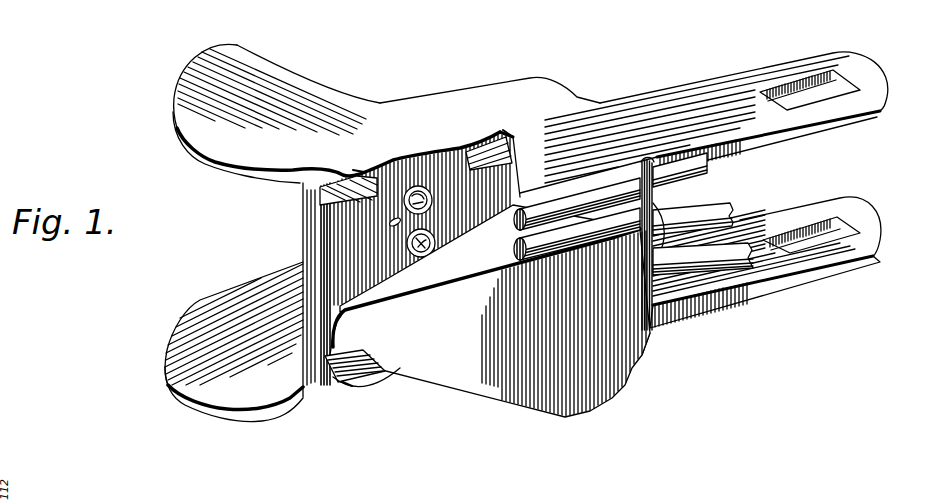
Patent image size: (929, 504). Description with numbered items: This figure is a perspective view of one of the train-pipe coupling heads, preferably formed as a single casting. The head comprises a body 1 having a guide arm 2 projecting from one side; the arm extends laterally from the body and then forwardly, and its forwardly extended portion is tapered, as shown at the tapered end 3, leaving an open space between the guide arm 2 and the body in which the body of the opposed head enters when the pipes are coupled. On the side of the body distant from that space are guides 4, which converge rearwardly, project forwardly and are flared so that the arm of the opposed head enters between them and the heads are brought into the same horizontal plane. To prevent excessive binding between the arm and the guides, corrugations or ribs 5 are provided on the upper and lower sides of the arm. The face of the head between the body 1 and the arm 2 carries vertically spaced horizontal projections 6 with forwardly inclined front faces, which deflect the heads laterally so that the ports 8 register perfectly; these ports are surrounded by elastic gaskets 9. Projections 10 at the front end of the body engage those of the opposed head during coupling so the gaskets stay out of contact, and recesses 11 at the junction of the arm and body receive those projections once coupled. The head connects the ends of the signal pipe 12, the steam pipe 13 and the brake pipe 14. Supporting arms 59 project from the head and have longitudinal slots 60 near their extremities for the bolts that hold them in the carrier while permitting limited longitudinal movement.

The body 1 is at (388, 221).
The guide arm 2 is at (492, 288).
The tapered end 3 is at (338, 378).
The guides 4 is at (360, 102).
The corrugations or ribs 5 is at (573, 238).
The horizontal projections 6 is at (513, 198).
The ports 8 is at (406, 204).
The elastic gaskets 9 is at (432, 232).
The projections 10 is at (361, 180).
The recesses 11 is at (503, 132).
The signal pipe 12 is at (707, 180).
The steam pipe 13 is at (753, 270).
The brake pipe 14 is at (733, 211).
The supporting arms 59 is at (820, 132).
The longitudinal slots 60 is at (800, 93).